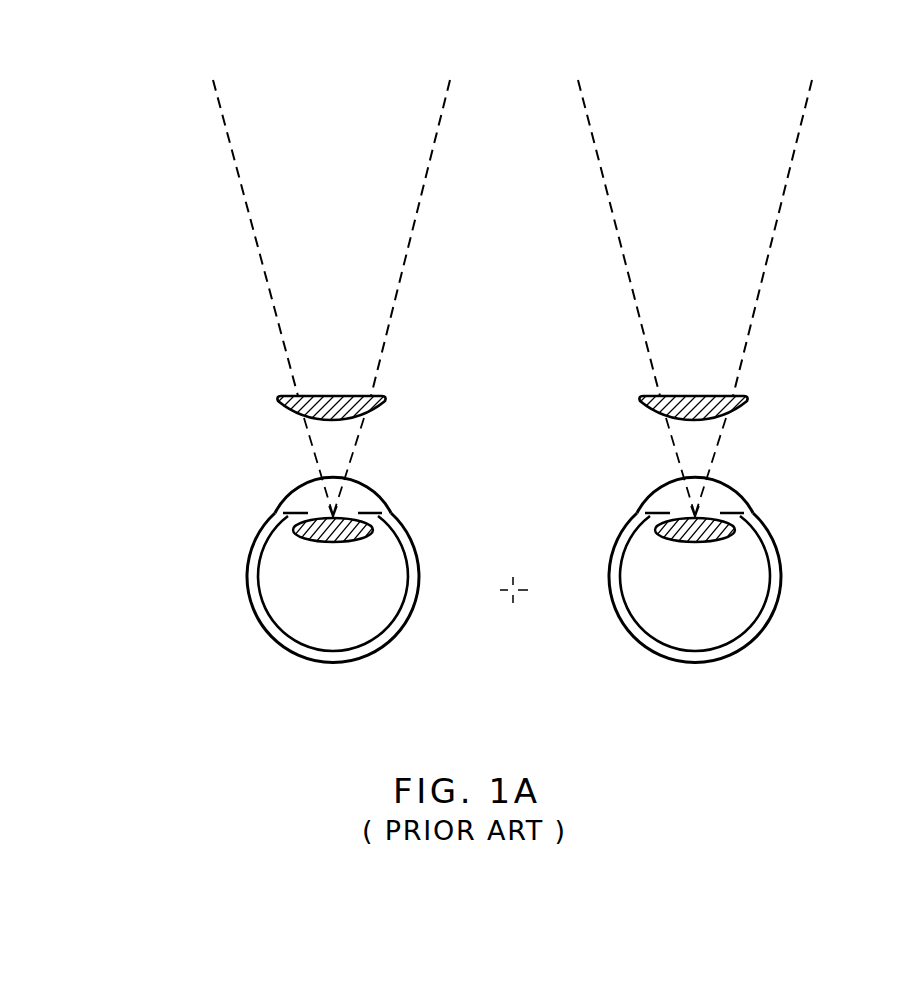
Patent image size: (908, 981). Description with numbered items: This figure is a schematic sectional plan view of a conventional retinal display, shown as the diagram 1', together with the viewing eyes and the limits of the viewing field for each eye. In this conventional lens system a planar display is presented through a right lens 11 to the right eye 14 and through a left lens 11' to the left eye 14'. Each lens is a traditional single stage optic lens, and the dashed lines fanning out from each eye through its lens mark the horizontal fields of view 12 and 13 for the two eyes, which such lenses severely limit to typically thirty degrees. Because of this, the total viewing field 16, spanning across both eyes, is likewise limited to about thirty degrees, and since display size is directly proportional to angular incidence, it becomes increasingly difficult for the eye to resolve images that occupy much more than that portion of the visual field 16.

The diagram 1' is at (711, 387).
The right lens 11 is at (301, 436).
The left lens 11' is at (667, 436).
The horizontal field of view 12 is at (583, 92).
The horizontal field of view 13 is at (448, 92).
The right eye 14 is at (661, 560).
The left eye 14' is at (293, 560).
The total viewing field 16 is at (780, 197).